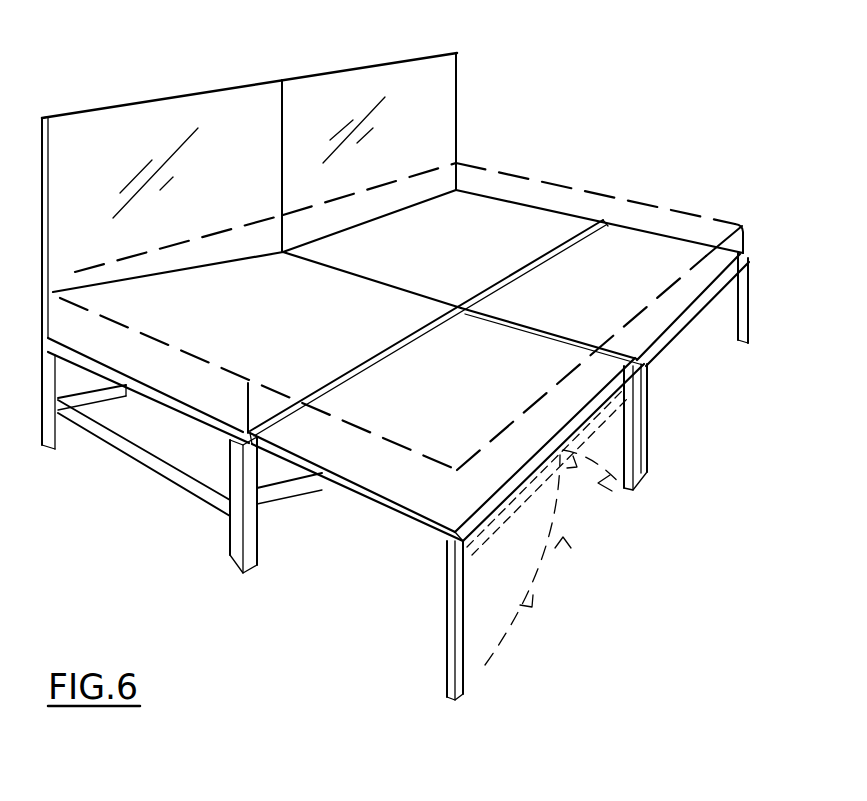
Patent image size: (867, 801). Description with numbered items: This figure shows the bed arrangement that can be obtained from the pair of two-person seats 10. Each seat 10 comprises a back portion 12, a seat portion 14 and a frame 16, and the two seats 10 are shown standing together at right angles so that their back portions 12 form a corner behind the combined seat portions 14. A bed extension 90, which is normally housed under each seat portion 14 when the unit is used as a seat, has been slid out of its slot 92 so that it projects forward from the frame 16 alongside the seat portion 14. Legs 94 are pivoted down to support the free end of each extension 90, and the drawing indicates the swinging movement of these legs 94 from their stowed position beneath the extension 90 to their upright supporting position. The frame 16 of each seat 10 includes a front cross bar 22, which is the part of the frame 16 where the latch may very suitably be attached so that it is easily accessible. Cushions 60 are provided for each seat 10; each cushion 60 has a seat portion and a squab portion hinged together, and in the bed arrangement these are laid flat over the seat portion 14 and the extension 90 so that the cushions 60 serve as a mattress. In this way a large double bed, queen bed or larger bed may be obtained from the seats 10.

The two-person seat 10 is at (182, 143).
The back portion 12 is at (122, 140).
The seat portion 14 is at (249, 325).
The frame 16 is at (230, 548).
The front cross bar 22 is at (290, 480).
The cushion 60 is at (547, 155).
The bed extension 90 is at (357, 537).
The slot 92 is at (525, 272).
The legs 94 is at (463, 668).